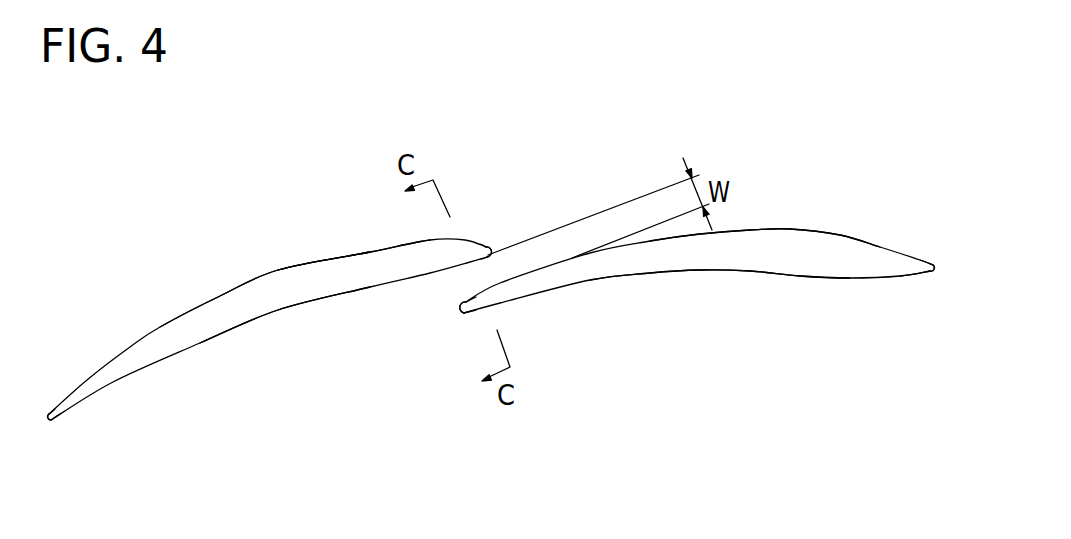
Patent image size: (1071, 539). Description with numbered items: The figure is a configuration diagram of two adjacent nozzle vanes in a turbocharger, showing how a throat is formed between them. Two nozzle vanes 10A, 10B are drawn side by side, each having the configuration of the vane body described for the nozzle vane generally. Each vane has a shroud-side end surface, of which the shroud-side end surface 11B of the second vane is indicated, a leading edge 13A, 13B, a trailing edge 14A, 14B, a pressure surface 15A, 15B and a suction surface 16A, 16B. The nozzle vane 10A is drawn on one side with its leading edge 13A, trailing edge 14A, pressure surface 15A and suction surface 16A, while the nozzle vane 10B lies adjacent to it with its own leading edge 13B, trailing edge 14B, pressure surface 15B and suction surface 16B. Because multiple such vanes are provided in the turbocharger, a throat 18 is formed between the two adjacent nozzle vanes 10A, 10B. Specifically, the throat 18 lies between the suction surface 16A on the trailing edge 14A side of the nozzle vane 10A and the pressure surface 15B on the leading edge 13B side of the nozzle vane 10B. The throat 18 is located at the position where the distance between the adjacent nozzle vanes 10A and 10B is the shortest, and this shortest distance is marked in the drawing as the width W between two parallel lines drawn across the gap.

The nozzle vane 10A is at (867, 250).
The nozzle vane 10B is at (160, 327).
The shroud-side end surface 11B is at (348, 257).
The leading edge 13A is at (940, 276).
The leading edge 13B is at (492, 253).
The trailing edge 14A is at (462, 318).
The trailing edge 14B is at (46, 426).
The pressure surface 15A is at (702, 270).
The pressure surface 15B is at (270, 313).
The suction surface 16A is at (782, 232).
The suction surface 16B is at (252, 279).
The throat 18 is at (454, 289).